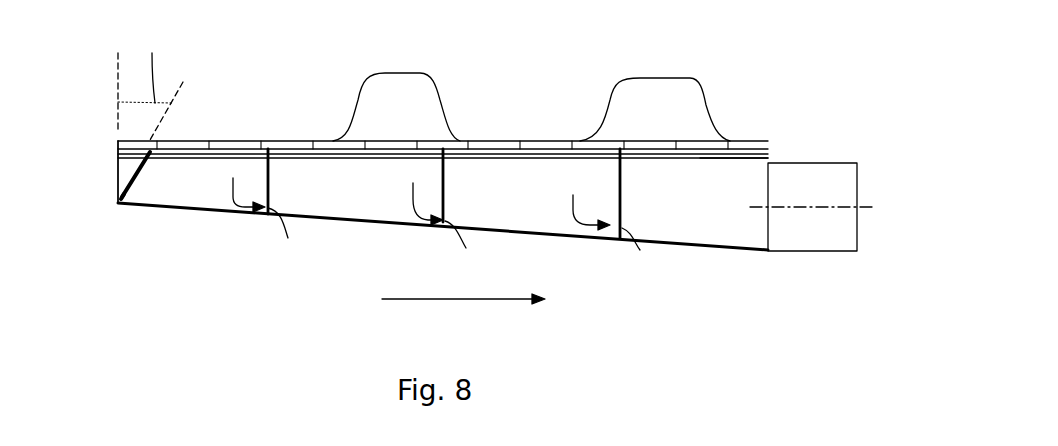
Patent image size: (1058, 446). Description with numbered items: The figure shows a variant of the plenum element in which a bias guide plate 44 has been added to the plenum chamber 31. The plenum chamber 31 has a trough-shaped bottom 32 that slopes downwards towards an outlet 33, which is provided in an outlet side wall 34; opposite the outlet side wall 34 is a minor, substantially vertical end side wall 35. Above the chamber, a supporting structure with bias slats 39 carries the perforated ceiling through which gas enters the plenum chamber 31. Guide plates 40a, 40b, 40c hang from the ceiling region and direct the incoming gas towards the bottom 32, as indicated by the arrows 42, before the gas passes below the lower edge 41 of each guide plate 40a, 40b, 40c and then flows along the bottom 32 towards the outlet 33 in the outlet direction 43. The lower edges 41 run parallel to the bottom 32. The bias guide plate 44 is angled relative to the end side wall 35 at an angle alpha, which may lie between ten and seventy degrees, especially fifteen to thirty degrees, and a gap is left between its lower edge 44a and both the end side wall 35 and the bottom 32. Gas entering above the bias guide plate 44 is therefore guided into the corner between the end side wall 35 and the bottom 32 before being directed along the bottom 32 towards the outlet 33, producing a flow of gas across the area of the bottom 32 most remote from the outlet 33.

The plenum chamber 31 is at (549, 195).
The bottom 32 is at (699, 246).
The outlet 33 is at (805, 195).
The outlet side wall 34 is at (768, 157).
The end side wall 35 is at (118, 177).
The bias slats 39 is at (531, 97).
The guide plate 40a is at (270, 190).
The guide plate 40b is at (445, 197).
The guide plate 40c is at (622, 205).
The lower edge 41 is at (288, 238).
The arrows 42 is at (225, 208).
The outlet direction 43 is at (462, 300).
The bias guide plate 44 is at (139, 178).
The lower edge 44a is at (118, 200).
The angle alpha is at (150, 82).